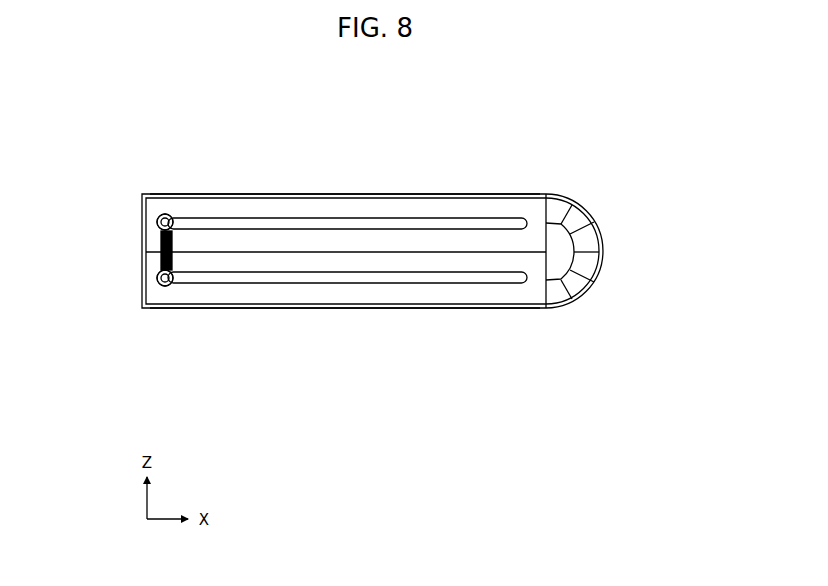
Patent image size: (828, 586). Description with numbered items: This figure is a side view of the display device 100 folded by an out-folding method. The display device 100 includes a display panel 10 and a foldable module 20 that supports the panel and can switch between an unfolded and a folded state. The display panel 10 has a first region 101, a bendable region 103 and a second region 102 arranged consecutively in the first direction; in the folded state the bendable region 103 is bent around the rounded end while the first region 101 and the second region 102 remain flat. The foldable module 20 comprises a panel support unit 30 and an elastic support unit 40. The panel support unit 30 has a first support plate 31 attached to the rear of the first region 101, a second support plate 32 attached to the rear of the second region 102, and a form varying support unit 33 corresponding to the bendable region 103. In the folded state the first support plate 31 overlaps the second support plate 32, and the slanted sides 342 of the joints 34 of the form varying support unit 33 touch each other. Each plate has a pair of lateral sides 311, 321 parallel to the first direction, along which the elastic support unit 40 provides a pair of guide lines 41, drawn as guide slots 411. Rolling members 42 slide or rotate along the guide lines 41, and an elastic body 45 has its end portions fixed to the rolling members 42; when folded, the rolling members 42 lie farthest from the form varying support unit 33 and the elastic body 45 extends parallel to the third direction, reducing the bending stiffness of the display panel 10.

The display device 100 is at (394, 100).
The display panel 10 is at (302, 192).
The first region 101 is at (237, 193).
The second region 102 is at (306, 309).
The bendable region 103 is at (584, 206).
The foldable module 20 is at (140, 268).
The panel support unit 30 is at (336, 470).
The first support plate 31 is at (157, 222).
The second support plate 32 is at (142, 298).
The form varying support unit 33 is at (592, 266).
The joint 34 is at (597, 236).
The sides of the first support plate 311 is at (375, 214).
The sides of the second support plate 321 is at (384, 299).
The slanted side 342 is at (567, 196).
The elastic support unit 40 is at (428, 470).
The guide line 41 is at (347, 254).
The guide groove 411 is at (451, 216).
The rolling member 42 is at (165, 211).
The elastic body 45 is at (160, 250).